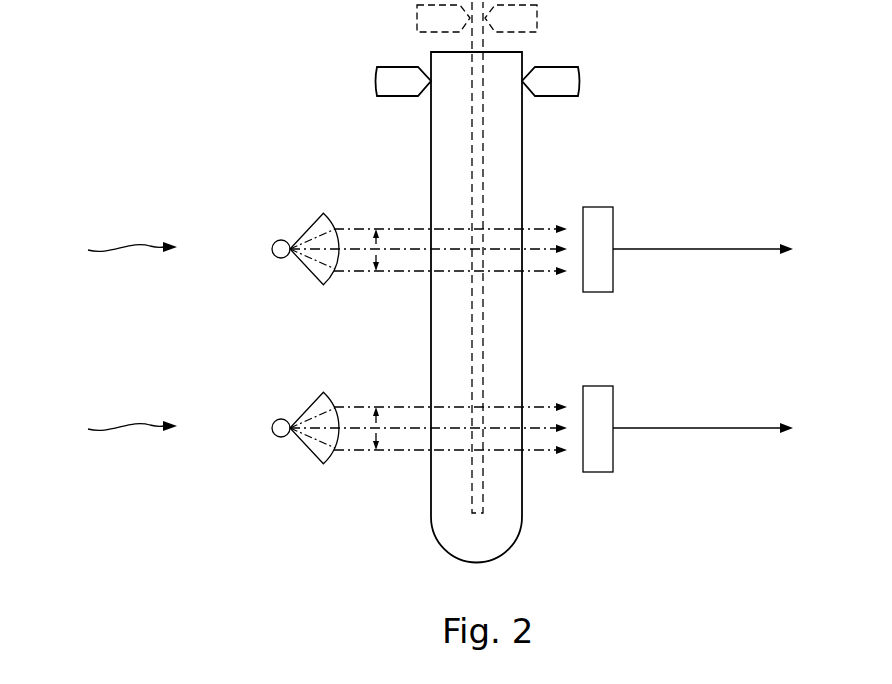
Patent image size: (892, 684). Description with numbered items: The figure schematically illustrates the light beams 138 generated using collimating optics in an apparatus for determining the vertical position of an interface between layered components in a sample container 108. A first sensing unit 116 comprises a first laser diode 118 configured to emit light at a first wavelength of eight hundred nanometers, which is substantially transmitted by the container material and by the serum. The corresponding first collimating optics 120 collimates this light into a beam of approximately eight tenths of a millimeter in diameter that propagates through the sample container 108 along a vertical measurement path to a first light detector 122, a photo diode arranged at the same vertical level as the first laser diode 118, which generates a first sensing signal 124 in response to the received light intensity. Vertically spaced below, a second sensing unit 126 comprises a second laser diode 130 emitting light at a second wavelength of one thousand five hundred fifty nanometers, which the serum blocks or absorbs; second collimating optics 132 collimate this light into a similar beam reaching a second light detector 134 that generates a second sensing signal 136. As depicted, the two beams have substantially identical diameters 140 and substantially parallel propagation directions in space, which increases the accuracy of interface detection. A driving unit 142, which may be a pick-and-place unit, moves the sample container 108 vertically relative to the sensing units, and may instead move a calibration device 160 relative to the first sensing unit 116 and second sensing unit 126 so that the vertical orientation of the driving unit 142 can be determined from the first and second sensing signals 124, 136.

The sample container 108 is at (522, 118).
The first sensing unit 116 is at (114, 249).
The first laser diode 118 is at (271, 249).
The first collimating optics 120 is at (307, 228).
The first light detector 122 is at (598, 217).
The first sensing signal 124 is at (700, 248).
The second sensing unit 126 is at (114, 429).
The second laser diode 130 is at (271, 428).
The second collimating optics 132 is at (307, 407).
The second light detector 134 is at (598, 396).
The second sensing signal 136 is at (700, 428).
The light beams 138 is at (403, 228).
The diameters 140 is at (374, 245).
The driving unit 142 is at (537, 18).
The calibration device 160 is at (483, 187).